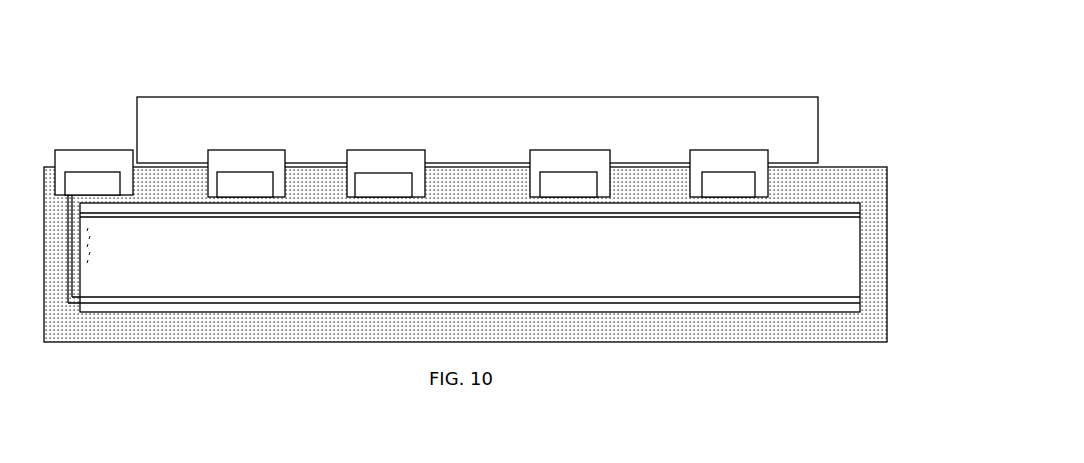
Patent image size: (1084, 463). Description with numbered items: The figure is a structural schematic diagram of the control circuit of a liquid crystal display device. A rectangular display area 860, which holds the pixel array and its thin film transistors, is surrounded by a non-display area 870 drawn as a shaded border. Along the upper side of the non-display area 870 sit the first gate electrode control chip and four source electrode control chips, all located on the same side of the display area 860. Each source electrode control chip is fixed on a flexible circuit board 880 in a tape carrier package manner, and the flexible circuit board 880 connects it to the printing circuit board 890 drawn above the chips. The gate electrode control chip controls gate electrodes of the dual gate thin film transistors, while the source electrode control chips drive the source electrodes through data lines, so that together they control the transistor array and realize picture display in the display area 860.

The display area 860 is at (838, 283).
The non-display area 870 is at (835, 195).
The flexible circuit board 880 is at (90, 160).
The printing circuit board (PCBA) 890 is at (475, 113).